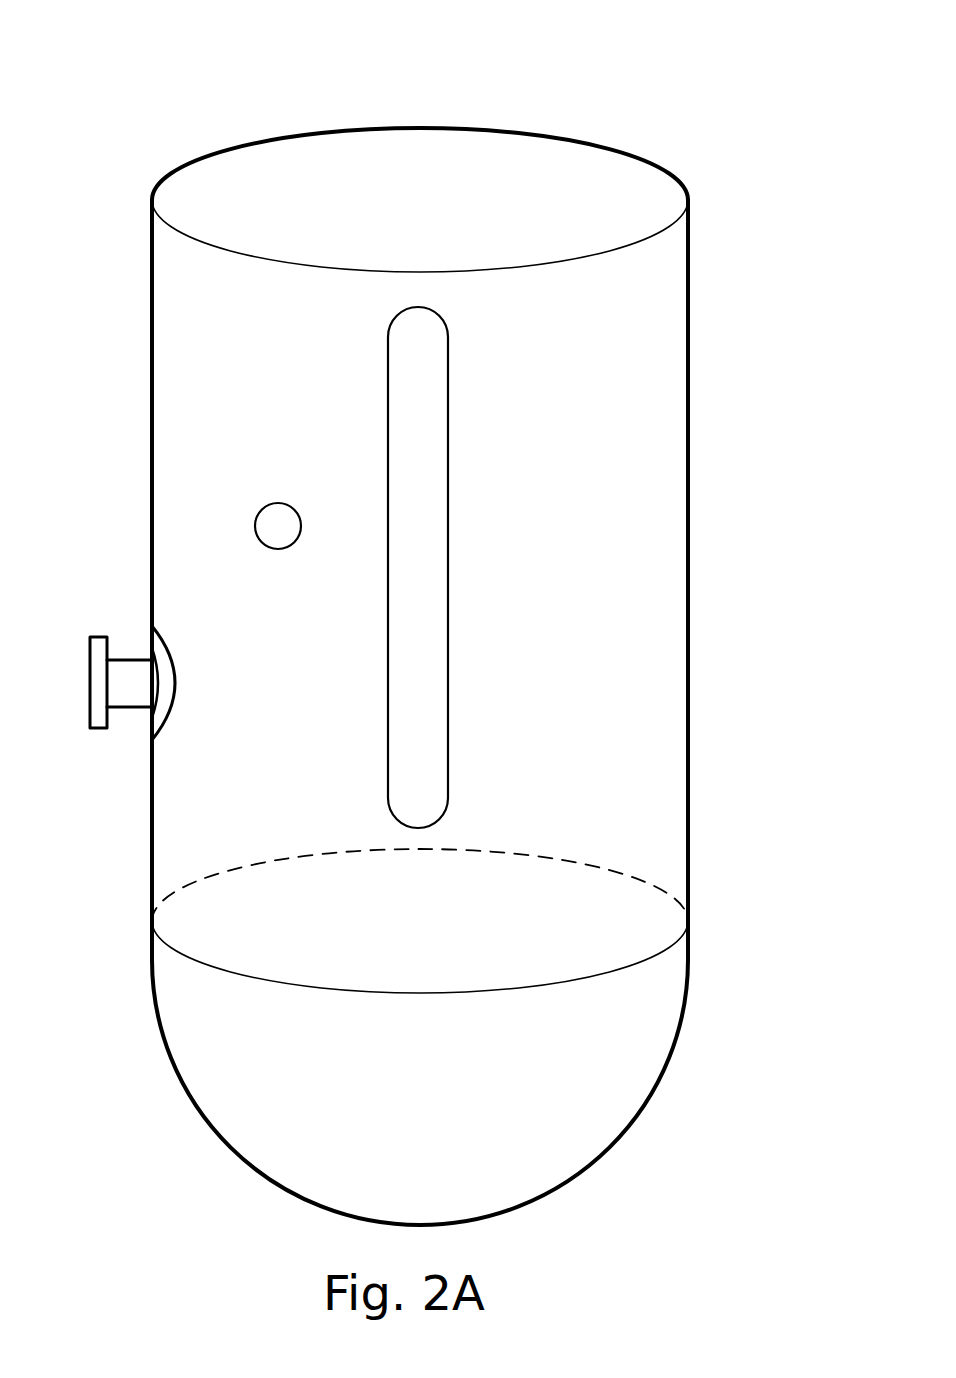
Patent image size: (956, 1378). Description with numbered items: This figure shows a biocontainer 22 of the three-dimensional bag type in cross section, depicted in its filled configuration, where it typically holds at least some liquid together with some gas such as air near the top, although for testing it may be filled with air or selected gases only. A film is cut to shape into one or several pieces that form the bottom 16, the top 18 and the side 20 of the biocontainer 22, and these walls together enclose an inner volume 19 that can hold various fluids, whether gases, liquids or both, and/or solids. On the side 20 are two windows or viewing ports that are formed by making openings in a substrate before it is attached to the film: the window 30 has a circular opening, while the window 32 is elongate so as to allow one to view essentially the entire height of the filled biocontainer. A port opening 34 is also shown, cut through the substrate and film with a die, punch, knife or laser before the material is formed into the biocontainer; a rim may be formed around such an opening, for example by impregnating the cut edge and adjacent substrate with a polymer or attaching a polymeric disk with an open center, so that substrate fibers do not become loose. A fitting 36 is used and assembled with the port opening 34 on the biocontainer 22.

The bottom 16 is at (607, 950).
The top 18 is at (627, 205).
The inner volume 19 is at (428, 252).
The side 20 is at (605, 610).
The biocontainer 22 is at (688, 755).
The window 30 is at (270, 530).
The window 32 is at (428, 452).
The port opening 34 is at (157, 717).
The fitting 36 is at (130, 667).